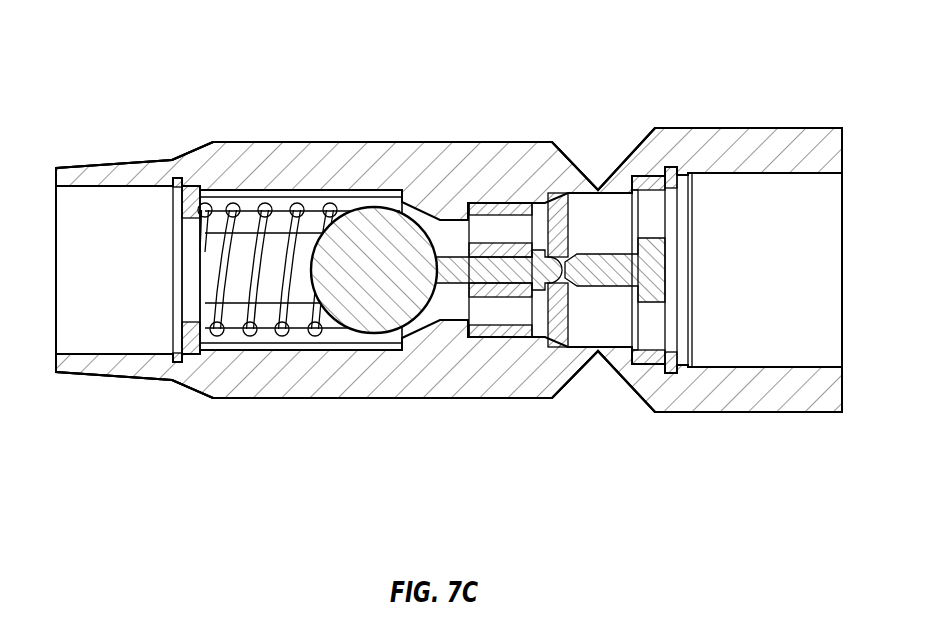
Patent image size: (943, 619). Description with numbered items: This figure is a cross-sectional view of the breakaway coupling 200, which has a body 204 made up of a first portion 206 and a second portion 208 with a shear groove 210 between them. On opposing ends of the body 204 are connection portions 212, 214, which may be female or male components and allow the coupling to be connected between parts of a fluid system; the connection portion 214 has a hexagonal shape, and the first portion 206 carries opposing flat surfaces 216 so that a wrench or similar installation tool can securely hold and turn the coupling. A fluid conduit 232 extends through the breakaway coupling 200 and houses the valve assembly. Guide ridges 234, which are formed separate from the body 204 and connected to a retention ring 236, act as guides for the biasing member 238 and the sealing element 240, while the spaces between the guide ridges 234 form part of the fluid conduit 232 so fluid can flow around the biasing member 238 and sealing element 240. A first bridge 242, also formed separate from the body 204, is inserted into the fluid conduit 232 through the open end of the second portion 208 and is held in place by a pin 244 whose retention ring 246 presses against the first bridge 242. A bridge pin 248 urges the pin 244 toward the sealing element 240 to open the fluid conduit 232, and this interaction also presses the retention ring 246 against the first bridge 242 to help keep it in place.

The breakaway coupling 200 is at (570, 56).
The body 204 is at (477, 133).
The first portion 206 is at (185, 138).
The second portion 208 is at (736, 118).
The shear groove 210 is at (600, 178).
The connection portion 212 is at (86, 152).
The connection portion 214 is at (768, 412).
The opposing flat surfaces 216 is at (343, 142).
The fluid conduit 232 is at (326, 354).
The guide ridges 234 is at (238, 320).
The retention ring 236 is at (193, 340).
The biasing member 238 is at (266, 203).
The sealing element 240 is at (400, 236).
The first bridge 242 is at (520, 330).
The pin 244 is at (557, 287).
The retention ring 246 is at (548, 248).
The bridge pin 248 is at (617, 282).